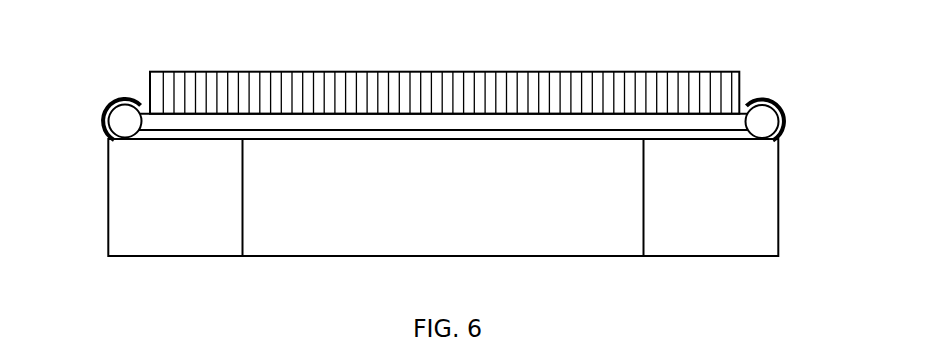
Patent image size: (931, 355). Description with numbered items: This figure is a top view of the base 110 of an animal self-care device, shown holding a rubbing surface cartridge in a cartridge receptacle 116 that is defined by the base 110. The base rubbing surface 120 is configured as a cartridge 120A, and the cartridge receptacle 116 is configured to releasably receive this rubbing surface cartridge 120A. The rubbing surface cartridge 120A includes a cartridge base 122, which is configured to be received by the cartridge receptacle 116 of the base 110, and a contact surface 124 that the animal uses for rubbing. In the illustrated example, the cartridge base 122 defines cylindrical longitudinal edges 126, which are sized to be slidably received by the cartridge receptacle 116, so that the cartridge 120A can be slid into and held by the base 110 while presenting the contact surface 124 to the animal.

The base 110 is at (757, 187).
The cartridge receptacle 116 is at (105, 102).
The base rubbing surface 120 is at (444, 66).
The rubbing surface cartridge 120A is at (444, 70).
The cartridge base 122 is at (520, 120).
The contact surface 124 is at (583, 88).
The cylindrical longitudinal edges 126 is at (124, 123).